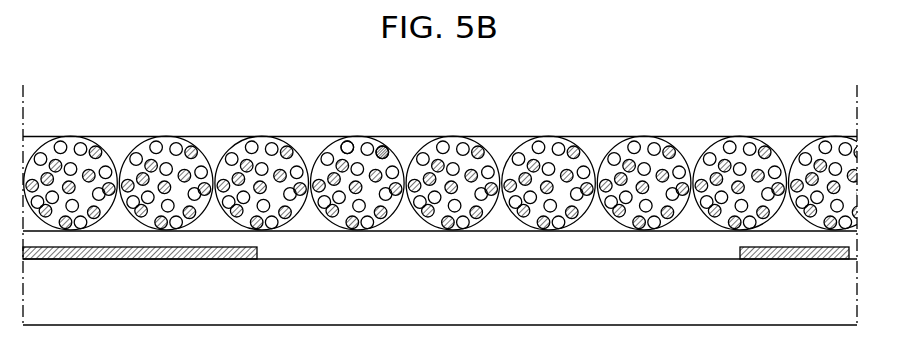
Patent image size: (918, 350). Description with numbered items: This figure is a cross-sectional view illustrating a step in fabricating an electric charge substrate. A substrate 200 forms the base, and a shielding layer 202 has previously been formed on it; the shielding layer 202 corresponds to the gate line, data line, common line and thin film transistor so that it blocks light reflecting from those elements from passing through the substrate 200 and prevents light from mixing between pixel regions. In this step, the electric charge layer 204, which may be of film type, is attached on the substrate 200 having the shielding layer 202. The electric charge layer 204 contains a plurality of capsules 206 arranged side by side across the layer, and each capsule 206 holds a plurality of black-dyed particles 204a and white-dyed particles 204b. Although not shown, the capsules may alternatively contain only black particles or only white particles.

The substrate 200 is at (833, 306).
The shielding layer 202 is at (195, 247).
The electric charge layer 204 is at (452, 140).
The black-dyed particles 204a is at (385, 133).
The white-dyed particles 204b is at (340, 133).
The capsule 206 is at (400, 146).